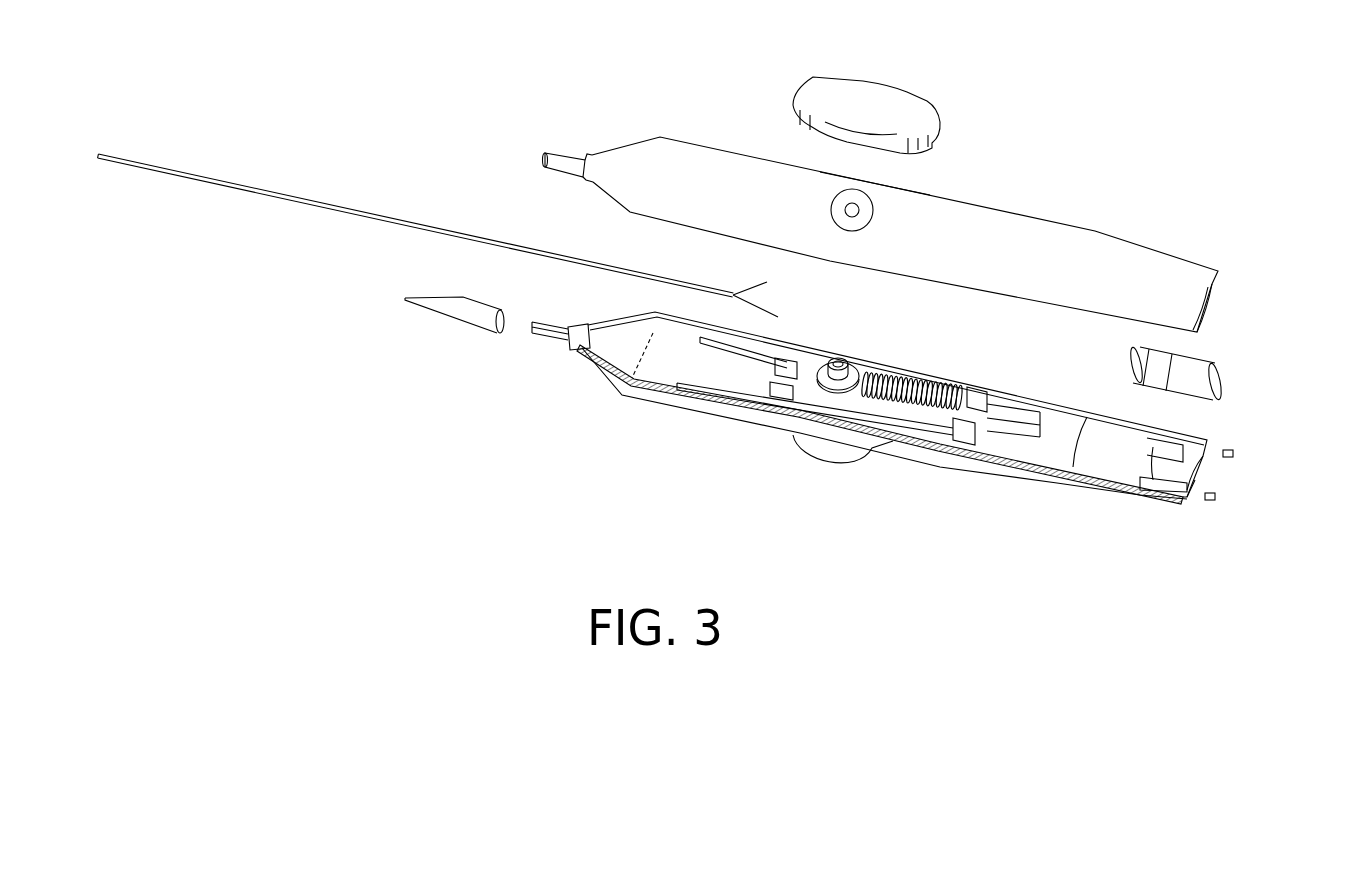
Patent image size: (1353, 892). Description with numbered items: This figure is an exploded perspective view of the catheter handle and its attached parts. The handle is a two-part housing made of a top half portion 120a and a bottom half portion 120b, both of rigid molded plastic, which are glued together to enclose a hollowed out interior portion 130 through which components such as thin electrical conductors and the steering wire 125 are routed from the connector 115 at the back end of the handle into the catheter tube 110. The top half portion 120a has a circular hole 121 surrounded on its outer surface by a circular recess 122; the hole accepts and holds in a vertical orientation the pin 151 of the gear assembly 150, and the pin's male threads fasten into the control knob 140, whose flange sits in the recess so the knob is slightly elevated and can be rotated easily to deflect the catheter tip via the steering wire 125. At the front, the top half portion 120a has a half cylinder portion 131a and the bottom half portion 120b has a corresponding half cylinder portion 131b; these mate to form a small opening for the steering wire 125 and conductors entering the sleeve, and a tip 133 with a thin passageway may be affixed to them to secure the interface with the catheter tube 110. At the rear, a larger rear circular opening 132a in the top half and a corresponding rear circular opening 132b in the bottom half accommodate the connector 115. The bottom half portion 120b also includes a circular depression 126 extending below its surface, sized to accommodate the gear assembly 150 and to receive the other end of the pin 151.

The catheter tube 110 is at (427, 228).
The connector 115 is at (1138, 370).
The top half portion 120a is at (990, 227).
The bottom half portion 120b is at (1057, 483).
The circular hole 121 is at (852, 210).
The circular recess 122 is at (872, 210).
The steering wire 125 is at (784, 282).
The circular depression 126 is at (850, 448).
The hollowed out interior portion 130 is at (655, 367).
The half cylinder portion 131a is at (563, 153).
The half cylinder portion 131b is at (545, 338).
The rear circular opening 132a is at (1210, 295).
The rear circular opening 132b is at (1192, 473).
The tip 133 is at (462, 317).
The control knob 140 is at (905, 107).
The gear assembly 150 is at (862, 394).
The pin 151 is at (840, 360).